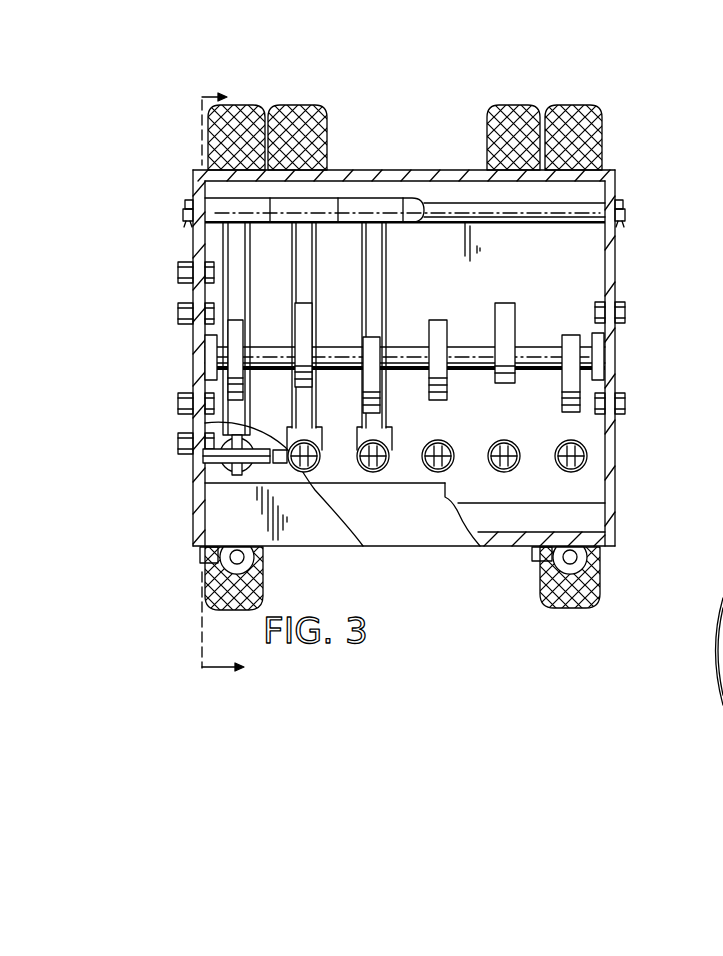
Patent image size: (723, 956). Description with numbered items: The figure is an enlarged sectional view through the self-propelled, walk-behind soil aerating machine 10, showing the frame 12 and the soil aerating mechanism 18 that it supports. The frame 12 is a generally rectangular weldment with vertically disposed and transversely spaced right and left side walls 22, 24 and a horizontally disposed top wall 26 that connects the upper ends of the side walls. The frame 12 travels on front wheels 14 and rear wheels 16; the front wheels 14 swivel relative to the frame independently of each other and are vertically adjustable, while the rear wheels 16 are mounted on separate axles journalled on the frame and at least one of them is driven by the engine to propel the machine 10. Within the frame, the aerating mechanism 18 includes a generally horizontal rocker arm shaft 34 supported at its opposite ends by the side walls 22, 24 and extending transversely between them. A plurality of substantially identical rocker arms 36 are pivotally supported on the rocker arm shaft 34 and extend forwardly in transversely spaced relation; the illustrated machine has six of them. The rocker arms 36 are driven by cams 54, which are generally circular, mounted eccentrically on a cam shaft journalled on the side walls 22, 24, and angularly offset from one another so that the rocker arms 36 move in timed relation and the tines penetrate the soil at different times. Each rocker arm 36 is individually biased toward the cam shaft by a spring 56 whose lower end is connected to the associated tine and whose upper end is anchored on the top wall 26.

The soil aerating machine 10 is at (422, 383).
The frame 12 is at (633, 104).
The front wheels 14 is at (263, 573).
The rear wheels 16 is at (270, 104).
The soil aerating mechanism 18 is at (216, 251).
The right side wall 22 is at (205, 351).
The left side wall 24 is at (613, 351).
The top wall 26 is at (210, 478).
The rocker arm shaft 34 is at (537, 212).
The rocker arms 36 is at (250, 240).
The cams 54 is at (229, 381).
The springs 56 is at (430, 470).